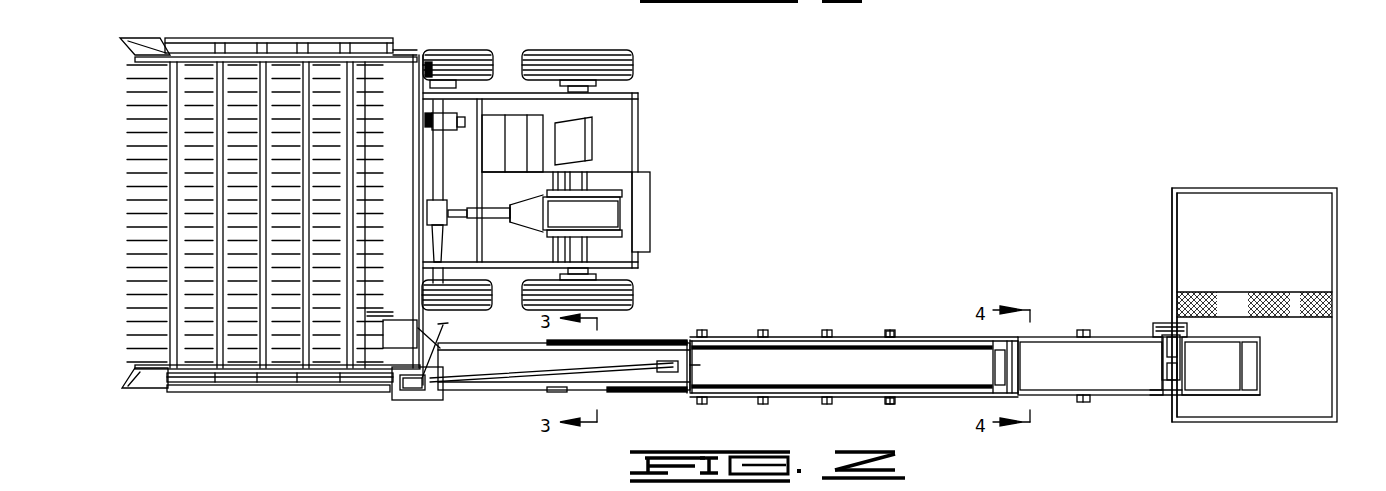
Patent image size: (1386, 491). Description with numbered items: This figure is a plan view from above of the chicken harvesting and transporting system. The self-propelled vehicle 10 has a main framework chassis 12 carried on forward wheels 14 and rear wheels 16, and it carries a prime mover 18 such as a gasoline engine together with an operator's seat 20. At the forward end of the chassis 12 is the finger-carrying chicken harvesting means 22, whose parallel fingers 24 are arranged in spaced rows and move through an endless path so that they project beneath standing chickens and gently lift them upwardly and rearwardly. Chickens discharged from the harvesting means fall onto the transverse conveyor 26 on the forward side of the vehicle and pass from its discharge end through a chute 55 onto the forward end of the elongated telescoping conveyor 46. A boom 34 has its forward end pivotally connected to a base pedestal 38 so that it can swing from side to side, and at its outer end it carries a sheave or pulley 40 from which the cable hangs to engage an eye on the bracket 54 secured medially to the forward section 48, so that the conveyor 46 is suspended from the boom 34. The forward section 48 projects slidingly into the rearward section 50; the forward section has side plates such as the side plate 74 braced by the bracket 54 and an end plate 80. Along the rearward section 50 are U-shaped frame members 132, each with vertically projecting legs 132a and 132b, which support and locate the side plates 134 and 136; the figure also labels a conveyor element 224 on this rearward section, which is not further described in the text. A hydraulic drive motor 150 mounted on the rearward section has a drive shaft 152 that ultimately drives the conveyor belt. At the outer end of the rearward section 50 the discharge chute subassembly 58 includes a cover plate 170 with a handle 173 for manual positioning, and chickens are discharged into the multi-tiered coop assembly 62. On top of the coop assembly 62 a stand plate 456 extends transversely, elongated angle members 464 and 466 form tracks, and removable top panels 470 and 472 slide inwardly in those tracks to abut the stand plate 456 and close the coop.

The self-propelled vehicle 10 is at (572, 173).
The main framework chassis 12 is at (640, 98).
The forward wheels 14 is at (471, 62).
The rear wheels 16 is at (606, 62).
The prime mover 18 is at (592, 223).
The operator's seat 20 is at (572, 130).
The finger-carrying chicken harvesting means 22 is at (253, 196).
The parallel fingers 24 is at (318, 78).
The transverse conveyor 26 is at (405, 151).
The boom 34 is at (460, 378).
The base pedestal 38 is at (397, 400).
The sheave or pulley 40 is at (666, 360).
The elongated telescoping conveyor 46 is at (854, 335).
The forward section 48 is at (565, 367).
The rearward section 50 is at (1090, 359).
The bracket 54 is at (695, 378).
The chute 55 is at (407, 345).
The discharge chute subassembly 58 is at (1228, 333).
The multi-tiered coop assembly 62 is at (1246, 278).
The side plate 74 is at (521, 391).
The end plate 80 is at (995, 365).
The U-shaped frame members 132 is at (815, 326).
The vertically projecting leg 132a is at (891, 402).
The vertically projecting leg 132b is at (895, 330).
The side plate 134 is at (1048, 397).
The side plate 136 is at (1040, 337).
The hydraulic drive motor 150 is at (1168, 352).
The drive shaft 152 is at (1170, 386).
The cover plate 170 is at (1225, 375).
The handle 173 is at (1262, 358).
The conveyor belt section 224 is at (854, 367).
The stand plate 456 is at (1305, 302).
The angle member 464 is at (1172, 217).
The angle member 466 is at (1337, 211).
The removable top panel 470 is at (1270, 235).
The removable top panel 472 is at (1304, 403).